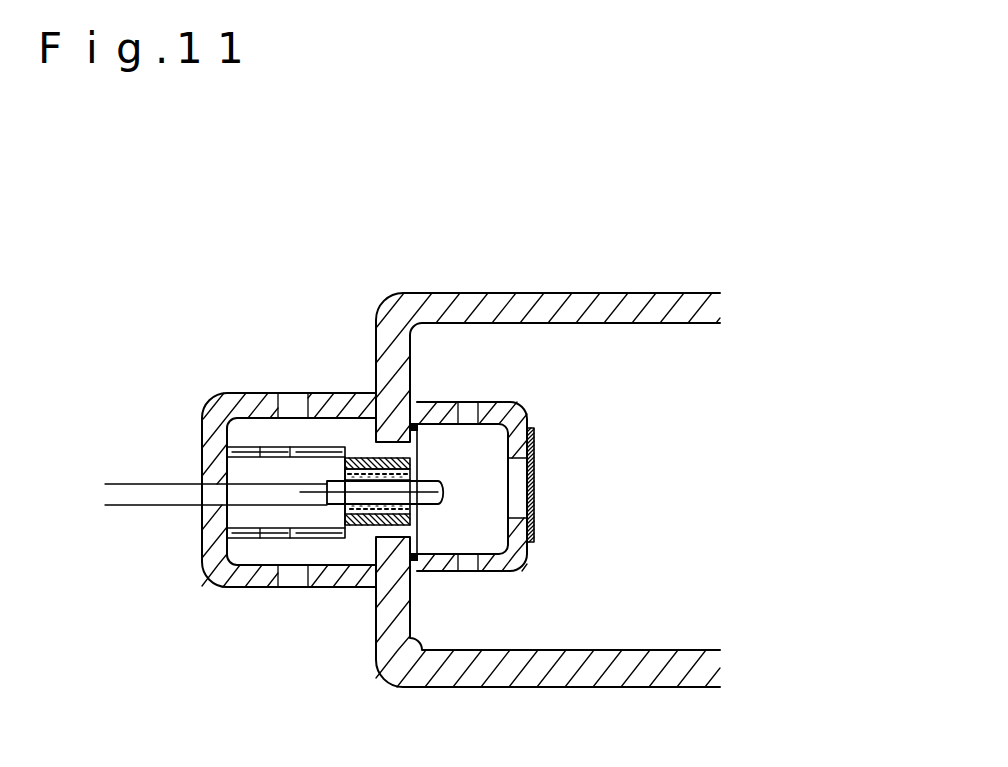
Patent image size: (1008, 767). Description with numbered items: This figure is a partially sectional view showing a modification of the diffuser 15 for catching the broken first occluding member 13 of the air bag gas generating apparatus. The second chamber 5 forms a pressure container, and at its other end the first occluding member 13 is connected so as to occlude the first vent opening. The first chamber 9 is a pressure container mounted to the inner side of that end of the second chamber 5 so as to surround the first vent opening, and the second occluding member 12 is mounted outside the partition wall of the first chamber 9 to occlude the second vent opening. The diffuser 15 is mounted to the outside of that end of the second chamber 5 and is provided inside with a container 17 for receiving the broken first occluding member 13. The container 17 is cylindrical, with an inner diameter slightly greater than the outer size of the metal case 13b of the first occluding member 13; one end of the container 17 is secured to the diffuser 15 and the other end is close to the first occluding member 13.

The second chamber 5 is at (583, 687).
The first chamber 9 is at (522, 566).
The second occluding member 12 is at (534, 485).
The first occluding member 13 is at (364, 527).
The metal case 13b is at (363, 460).
The diffuser 15 is at (223, 588).
The container 17 is at (238, 447).